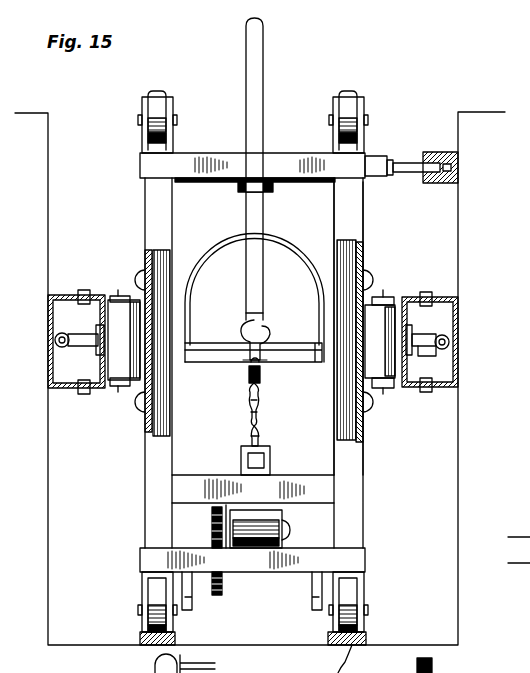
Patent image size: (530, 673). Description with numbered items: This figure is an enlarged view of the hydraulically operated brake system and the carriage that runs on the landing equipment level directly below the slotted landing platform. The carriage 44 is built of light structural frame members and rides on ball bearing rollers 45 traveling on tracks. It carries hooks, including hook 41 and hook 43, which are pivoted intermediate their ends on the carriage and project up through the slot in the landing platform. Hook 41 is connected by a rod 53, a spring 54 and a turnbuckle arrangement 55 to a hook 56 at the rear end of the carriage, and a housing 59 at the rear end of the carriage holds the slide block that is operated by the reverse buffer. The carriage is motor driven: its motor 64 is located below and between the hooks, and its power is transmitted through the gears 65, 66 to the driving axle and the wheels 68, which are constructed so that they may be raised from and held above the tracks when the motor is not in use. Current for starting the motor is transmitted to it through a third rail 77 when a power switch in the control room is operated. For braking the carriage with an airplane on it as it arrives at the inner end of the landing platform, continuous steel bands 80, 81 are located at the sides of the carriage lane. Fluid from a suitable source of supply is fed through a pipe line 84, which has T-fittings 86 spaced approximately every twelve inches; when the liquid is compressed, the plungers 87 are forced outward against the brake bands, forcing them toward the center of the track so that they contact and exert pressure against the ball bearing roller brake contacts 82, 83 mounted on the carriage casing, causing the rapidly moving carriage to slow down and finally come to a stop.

The hook 41 is at (263, 88).
The hook 43 is at (300, 182).
The carriage 44 is at (363, 212).
The ball bearing rollers 45 is at (166, 96).
The rod 53 is at (265, 338).
The spring 54 is at (262, 378).
The turnbuckle arrangement 55 is at (259, 408).
The hook 56 is at (260, 436).
The housing 59 is at (270, 460).
The motor 64 is at (268, 553).
The gear 65 is at (212, 518).
The gear 66 is at (216, 596).
The wheels 68 is at (350, 595).
The third rail 77 is at (458, 168).
The steel band 80 is at (445, 297).
The steel band 81 is at (410, 325).
The ball bearing roller brake contact 82 is at (380, 305).
The ball bearing roller brake contact 83 is at (113, 300).
The pipe line 84 is at (449, 342).
The T-fittings 86 is at (427, 356).
The plungers 87 is at (424, 334).